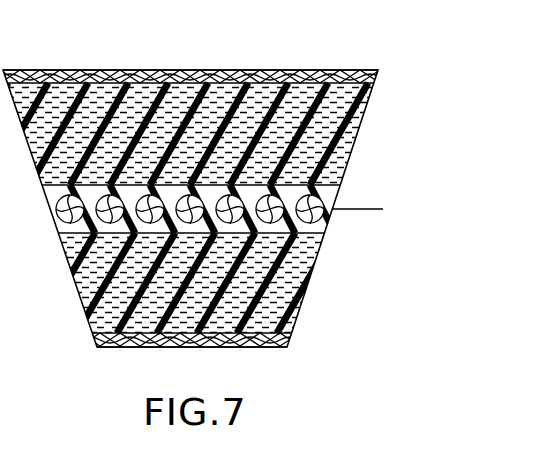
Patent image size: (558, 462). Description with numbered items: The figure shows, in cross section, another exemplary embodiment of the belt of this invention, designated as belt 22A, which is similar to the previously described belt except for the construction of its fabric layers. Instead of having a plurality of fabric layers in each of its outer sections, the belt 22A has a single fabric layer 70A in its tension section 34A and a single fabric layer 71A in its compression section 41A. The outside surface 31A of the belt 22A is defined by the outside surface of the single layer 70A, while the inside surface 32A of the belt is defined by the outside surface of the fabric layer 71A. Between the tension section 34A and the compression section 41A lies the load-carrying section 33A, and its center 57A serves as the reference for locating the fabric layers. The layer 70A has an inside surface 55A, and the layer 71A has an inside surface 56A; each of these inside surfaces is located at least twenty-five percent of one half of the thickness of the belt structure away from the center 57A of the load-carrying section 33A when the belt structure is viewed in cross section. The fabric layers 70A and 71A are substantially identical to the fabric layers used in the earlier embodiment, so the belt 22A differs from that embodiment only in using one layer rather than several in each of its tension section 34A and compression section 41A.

The belt 22A is at (325, 48).
The outside surface 31A is at (227, 70).
The fabric layer 70A is at (170, 73).
The tension section 34A is at (364, 148).
The inside surface 55A is at (360, 106).
The load-carrying section 33A is at (350, 224).
The center of the load-carrying section 57A is at (351, 208).
The compression section 41A is at (328, 300).
The inside surface 56A is at (117, 332).
The inside surface 32A is at (161, 349).
The fabric layer 71A is at (272, 350).